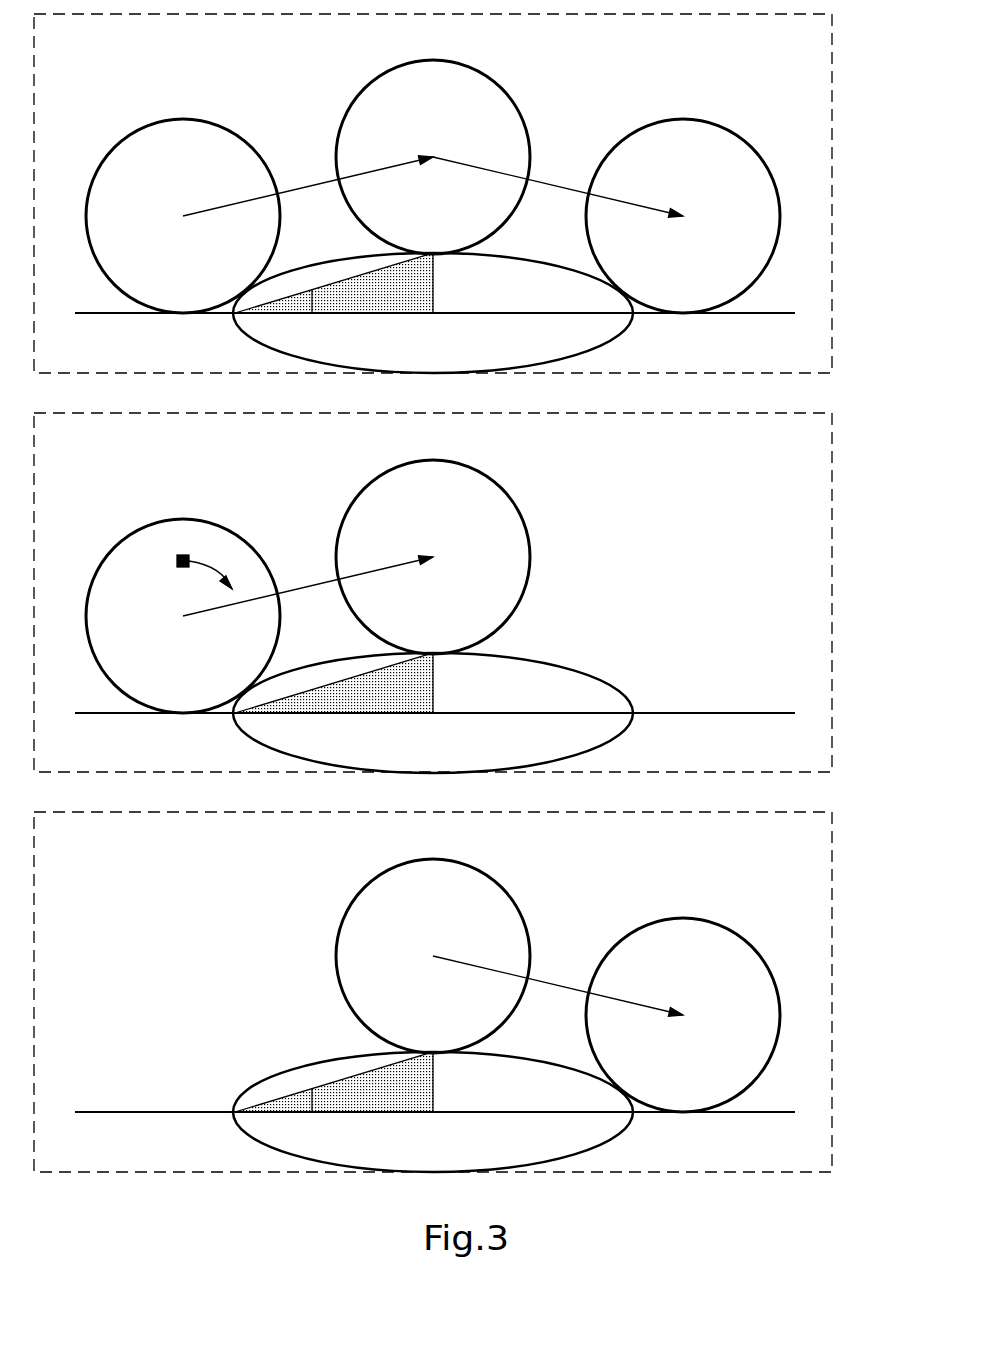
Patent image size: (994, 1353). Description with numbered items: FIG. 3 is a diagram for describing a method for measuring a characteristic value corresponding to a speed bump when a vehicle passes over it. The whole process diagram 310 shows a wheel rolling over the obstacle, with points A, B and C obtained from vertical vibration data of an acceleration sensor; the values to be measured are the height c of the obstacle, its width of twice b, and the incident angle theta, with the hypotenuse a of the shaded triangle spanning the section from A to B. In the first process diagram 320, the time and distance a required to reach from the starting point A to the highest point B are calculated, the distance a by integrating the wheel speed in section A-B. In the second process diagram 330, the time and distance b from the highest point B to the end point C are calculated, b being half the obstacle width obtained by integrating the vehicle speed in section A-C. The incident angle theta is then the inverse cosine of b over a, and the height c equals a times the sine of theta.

The whole process diagram 310 is at (832, 193).
The first process diagram 320 is at (832, 592).
The second process diagram 330 is at (832, 990).